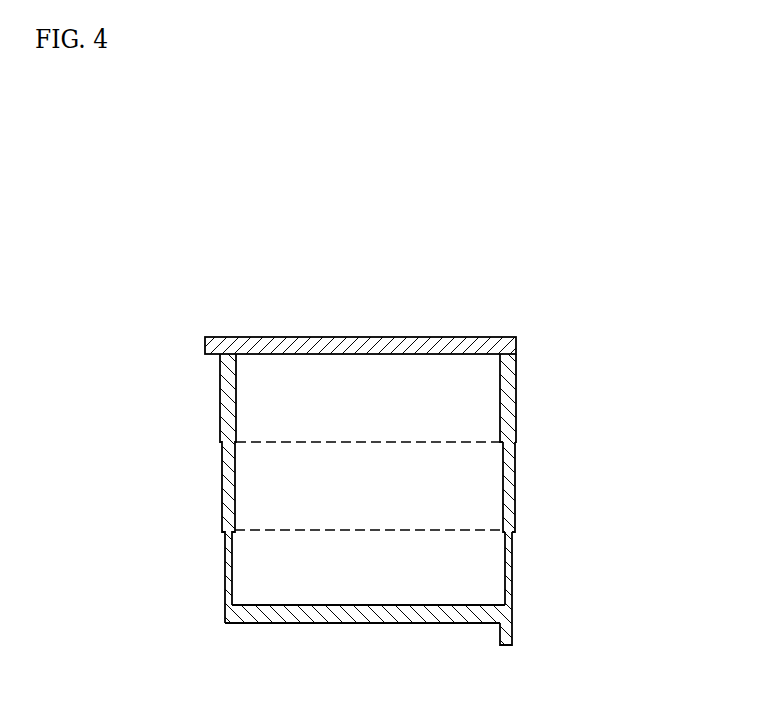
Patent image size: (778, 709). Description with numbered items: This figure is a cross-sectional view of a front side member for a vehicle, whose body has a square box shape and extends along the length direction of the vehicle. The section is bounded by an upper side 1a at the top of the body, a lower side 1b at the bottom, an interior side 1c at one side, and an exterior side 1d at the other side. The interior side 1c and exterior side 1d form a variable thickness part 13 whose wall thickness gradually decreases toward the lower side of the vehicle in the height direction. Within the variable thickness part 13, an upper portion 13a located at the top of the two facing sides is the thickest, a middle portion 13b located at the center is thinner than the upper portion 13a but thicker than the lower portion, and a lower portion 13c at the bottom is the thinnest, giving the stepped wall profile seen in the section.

The upper side 1a is at (343, 340).
The lower side 1b is at (335, 622).
The interior side 1c is at (195, 479).
The exterior side 1d is at (574, 499).
The variable thickness part 13 is at (591, 499).
The upper portion 13a is at (513, 387).
The middle portion 13b is at (511, 457).
The lower portion 13c is at (571, 577).